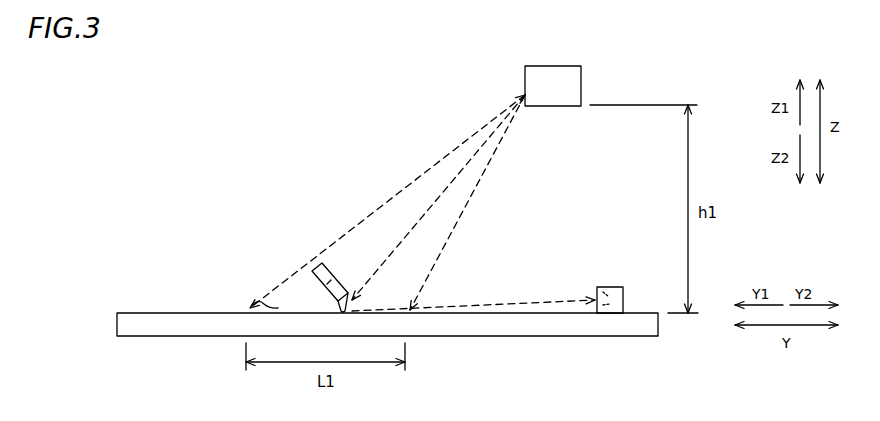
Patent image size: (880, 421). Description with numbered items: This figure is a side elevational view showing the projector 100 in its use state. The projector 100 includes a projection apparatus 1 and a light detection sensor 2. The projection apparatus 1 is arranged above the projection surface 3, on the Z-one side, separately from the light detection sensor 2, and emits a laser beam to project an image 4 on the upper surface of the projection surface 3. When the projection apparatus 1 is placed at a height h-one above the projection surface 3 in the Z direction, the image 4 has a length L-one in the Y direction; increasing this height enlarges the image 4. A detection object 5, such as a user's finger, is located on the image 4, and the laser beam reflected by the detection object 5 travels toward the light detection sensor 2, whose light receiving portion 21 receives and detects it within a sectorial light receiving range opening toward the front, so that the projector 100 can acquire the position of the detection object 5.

The projector 100 is at (665, 71).
The projection apparatus 1 is at (563, 66).
The light detection sensor 2 is at (618, 287).
The light receiving portion 21 is at (600, 287).
The projection surface 3 is at (208, 313).
The image 4 is at (278, 309).
The detection object 5 is at (346, 288).